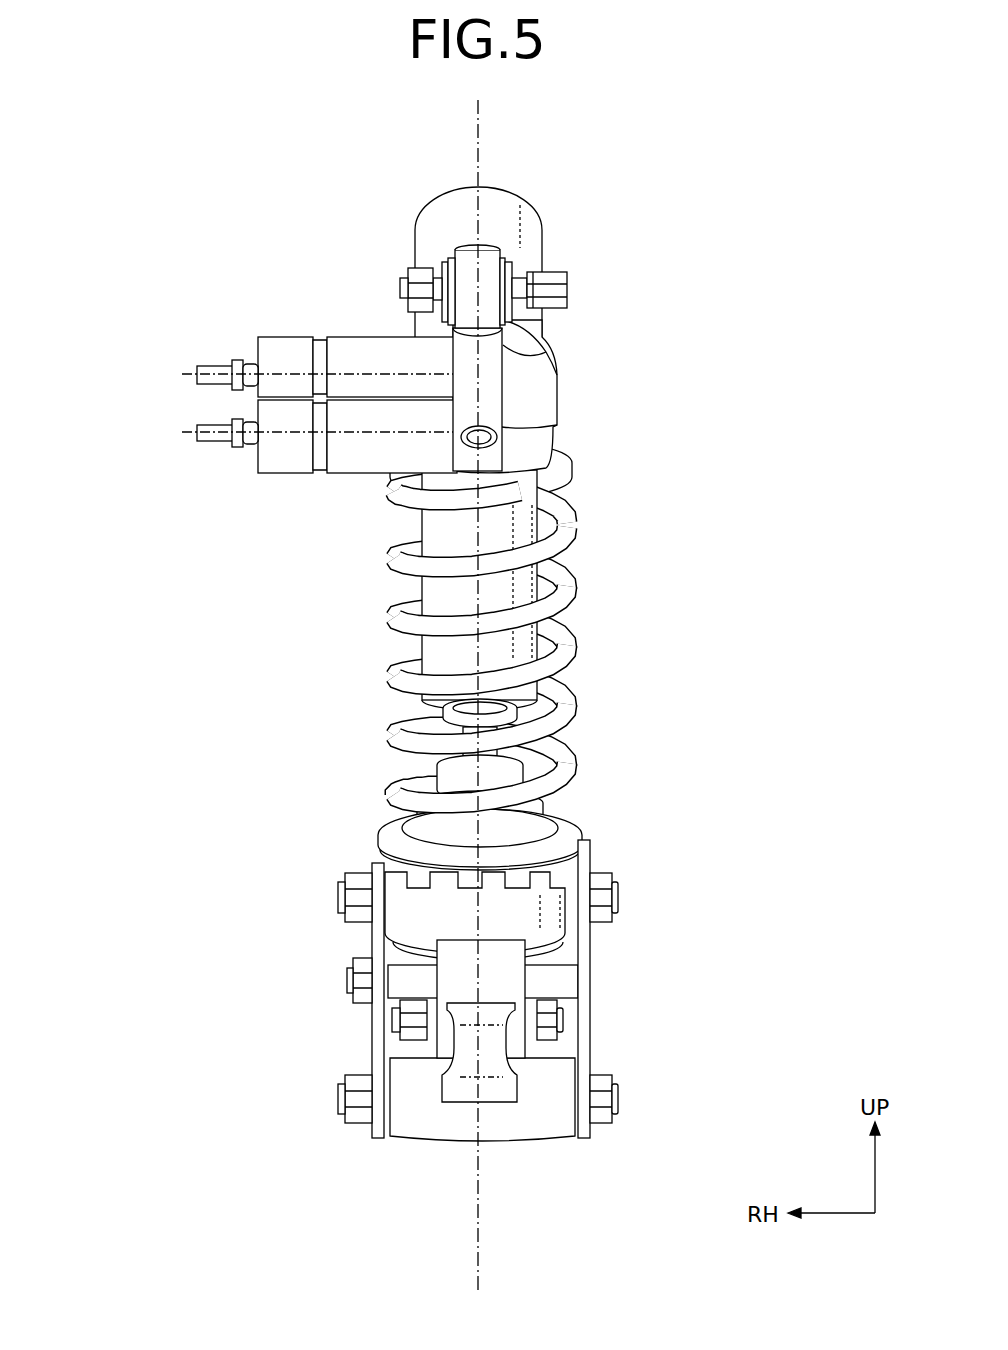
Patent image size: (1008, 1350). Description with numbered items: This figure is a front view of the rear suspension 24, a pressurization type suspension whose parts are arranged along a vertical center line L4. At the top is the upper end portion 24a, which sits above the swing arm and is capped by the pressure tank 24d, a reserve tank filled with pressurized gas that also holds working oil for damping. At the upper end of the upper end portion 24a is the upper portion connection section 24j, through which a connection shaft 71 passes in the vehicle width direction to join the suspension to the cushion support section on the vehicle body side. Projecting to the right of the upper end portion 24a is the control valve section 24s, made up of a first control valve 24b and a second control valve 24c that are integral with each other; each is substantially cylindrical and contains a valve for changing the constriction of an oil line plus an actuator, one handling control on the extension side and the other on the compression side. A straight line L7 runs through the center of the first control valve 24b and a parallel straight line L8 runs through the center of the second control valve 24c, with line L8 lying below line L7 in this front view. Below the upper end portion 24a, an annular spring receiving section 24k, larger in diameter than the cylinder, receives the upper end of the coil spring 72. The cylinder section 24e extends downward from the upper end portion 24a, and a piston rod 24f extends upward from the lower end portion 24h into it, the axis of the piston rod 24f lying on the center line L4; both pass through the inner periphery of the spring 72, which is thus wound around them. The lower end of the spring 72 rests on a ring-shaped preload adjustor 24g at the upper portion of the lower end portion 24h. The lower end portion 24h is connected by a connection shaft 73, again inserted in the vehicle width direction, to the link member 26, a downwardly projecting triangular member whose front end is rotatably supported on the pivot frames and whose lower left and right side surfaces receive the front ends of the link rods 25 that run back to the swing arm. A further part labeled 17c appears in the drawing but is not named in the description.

The rear suspension 24 is at (604, 212).
The upper end portion 24a is at (547, 380).
The first control valve 24b is at (360, 347).
The second control valve 24c is at (360, 437).
The control valve section 24s is at (243, 384).
The pressure tank 24d is at (460, 217).
The cylinder section 24e is at (542, 586).
The piston rod 24f is at (463, 758).
The preload adjustor 24g is at (583, 838).
The lower end portion 24h is at (430, 917).
The upper portion connection section 24j is at (470, 262).
The spring receiving section 24k is at (575, 456).
The connection shaft 71 is at (568, 292).
The spring 72 is at (477, 670).
The connection shaft 73 is at (405, 1016).
The cushion arm 17c is at (560, 983).
The link rods 25 is at (377, 1028).
The link member 26 is at (438, 1123).
The center line L4 is at (488, 126).
The straight line L7 is at (386, 373).
The straight line L8 is at (357, 434).